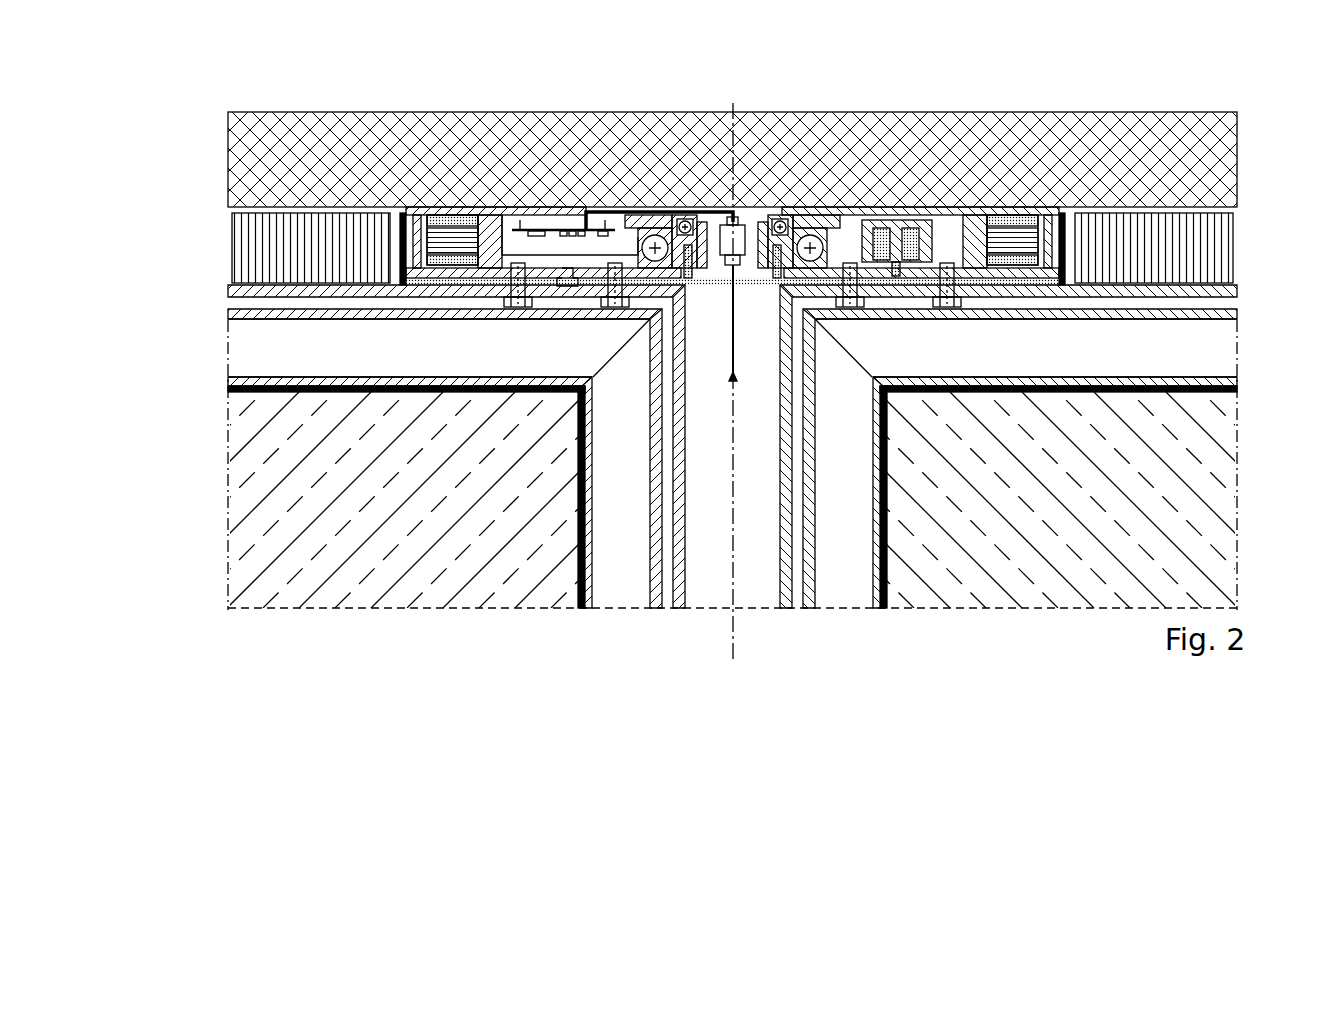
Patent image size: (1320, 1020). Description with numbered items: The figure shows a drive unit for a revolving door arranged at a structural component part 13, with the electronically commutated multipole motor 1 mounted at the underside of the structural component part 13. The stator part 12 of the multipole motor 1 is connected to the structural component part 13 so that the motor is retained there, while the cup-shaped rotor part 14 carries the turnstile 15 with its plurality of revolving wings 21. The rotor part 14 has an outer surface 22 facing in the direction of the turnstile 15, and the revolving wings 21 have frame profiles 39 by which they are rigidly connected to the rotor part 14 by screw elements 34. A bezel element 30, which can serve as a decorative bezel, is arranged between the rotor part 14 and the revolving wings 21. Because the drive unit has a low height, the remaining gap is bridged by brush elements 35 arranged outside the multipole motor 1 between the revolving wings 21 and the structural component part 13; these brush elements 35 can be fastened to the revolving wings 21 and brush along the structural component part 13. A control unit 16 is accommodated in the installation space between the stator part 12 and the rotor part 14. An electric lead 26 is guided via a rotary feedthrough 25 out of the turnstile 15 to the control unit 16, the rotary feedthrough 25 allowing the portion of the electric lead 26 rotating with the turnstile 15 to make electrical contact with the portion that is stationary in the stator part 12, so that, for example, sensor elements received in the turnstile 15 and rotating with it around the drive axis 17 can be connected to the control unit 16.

The multipole motor 1 is at (898, 194).
The stator part 12 is at (553, 212).
The structural component part 13 is at (628, 140).
The rotor part 14 is at (493, 262).
The turnstile 15 is at (212, 490).
The control unit 16 is at (590, 205).
The drive axis 17 is at (735, 633).
The revolving wings 21 is at (375, 590).
The outer surface 22 is at (447, 285).
The rotary feedthrough 25 is at (748, 212).
The electric lead 26 is at (698, 218).
The bezel element 30 is at (468, 286).
The screw elements 34 is at (613, 308).
The brush elements 35 is at (262, 250).
The frame profiles 39 is at (255, 350).